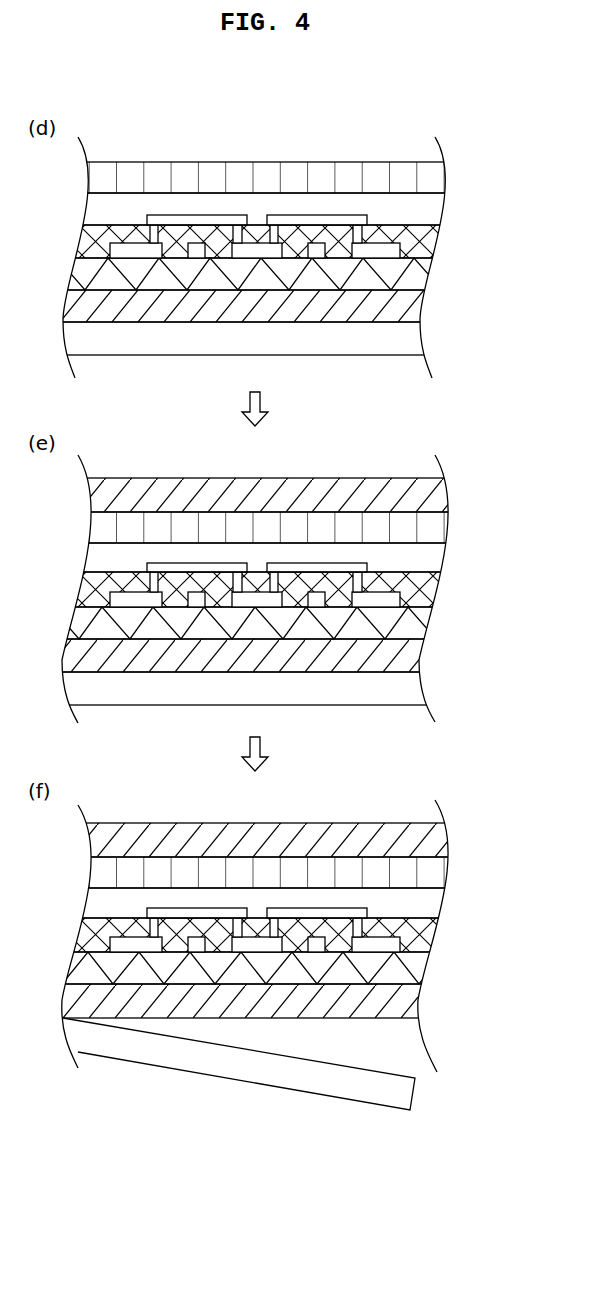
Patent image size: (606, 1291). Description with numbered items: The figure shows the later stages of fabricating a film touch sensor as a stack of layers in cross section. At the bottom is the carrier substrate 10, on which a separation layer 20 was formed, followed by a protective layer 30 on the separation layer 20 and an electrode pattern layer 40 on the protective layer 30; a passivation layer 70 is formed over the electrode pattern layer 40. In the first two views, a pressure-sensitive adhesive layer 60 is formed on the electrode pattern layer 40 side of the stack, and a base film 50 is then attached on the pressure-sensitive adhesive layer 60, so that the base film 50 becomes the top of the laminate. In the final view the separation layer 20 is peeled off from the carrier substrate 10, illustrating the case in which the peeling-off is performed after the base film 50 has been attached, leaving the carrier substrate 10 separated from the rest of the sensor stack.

The carrier substrate 10 is at (406, 340).
The separation layer 20 is at (408, 310).
The protective layer 30 is at (407, 276).
The electrode pattern layer 40 is at (457, 215).
The base film 50 is at (422, 497).
The pressure-sensitive adhesive layer 60 is at (420, 178).
The passivation layer 70 is at (421, 205).